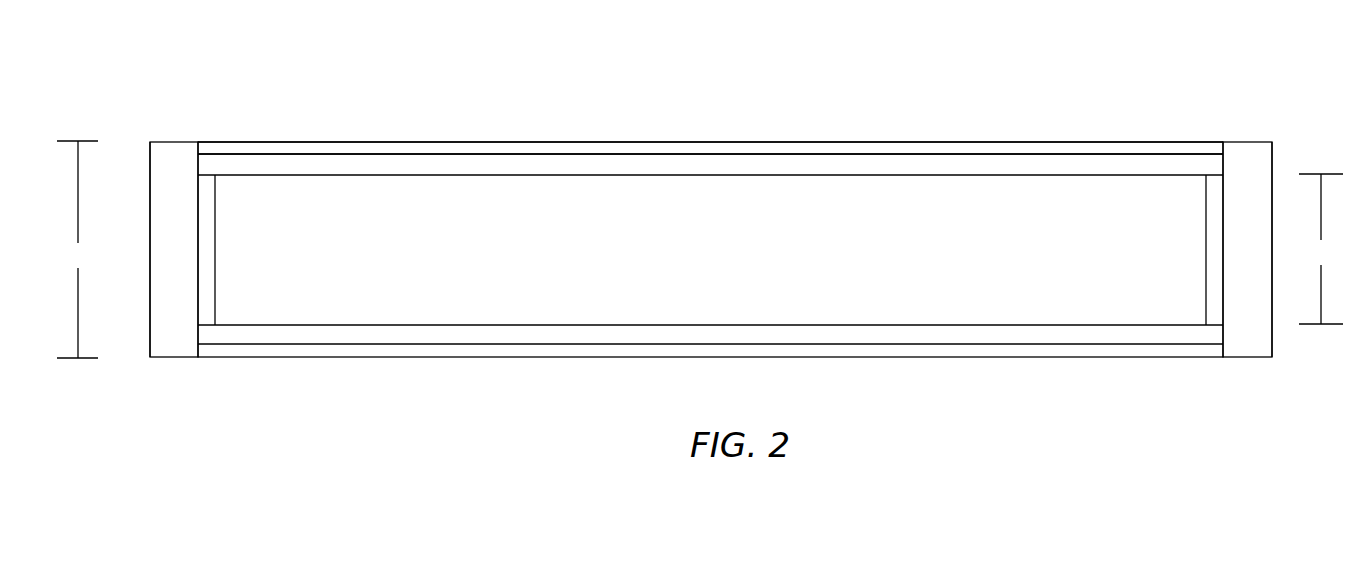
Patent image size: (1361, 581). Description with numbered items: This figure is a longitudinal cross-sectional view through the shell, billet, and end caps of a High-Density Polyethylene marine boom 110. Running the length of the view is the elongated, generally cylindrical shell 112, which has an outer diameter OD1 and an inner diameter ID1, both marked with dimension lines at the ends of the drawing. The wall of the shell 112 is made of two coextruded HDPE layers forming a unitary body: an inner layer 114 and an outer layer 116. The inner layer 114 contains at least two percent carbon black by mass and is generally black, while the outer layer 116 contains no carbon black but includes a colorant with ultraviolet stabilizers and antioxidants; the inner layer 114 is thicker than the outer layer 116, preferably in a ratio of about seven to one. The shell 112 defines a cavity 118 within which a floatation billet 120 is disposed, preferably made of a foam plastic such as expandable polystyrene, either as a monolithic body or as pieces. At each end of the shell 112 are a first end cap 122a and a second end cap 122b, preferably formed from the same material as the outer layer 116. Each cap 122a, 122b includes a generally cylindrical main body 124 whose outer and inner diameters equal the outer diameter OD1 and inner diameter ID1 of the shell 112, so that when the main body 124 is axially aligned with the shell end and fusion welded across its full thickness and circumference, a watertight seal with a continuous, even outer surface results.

The marine boom 110 is at (883, 81).
The shell 112 is at (1053, 140).
The inner layer 114 is at (534, 158).
The outer layer 116 is at (660, 147).
The cavity 118 is at (207, 193).
The floatation billet 120 is at (733, 257).
The first end cap 122a is at (172, 158).
The second end cap 122b is at (1254, 345).
The main body 124 is at (160, 312).
The outer diameter OD1 is at (77, 249).
The inner diameter ID1 is at (1321, 249).